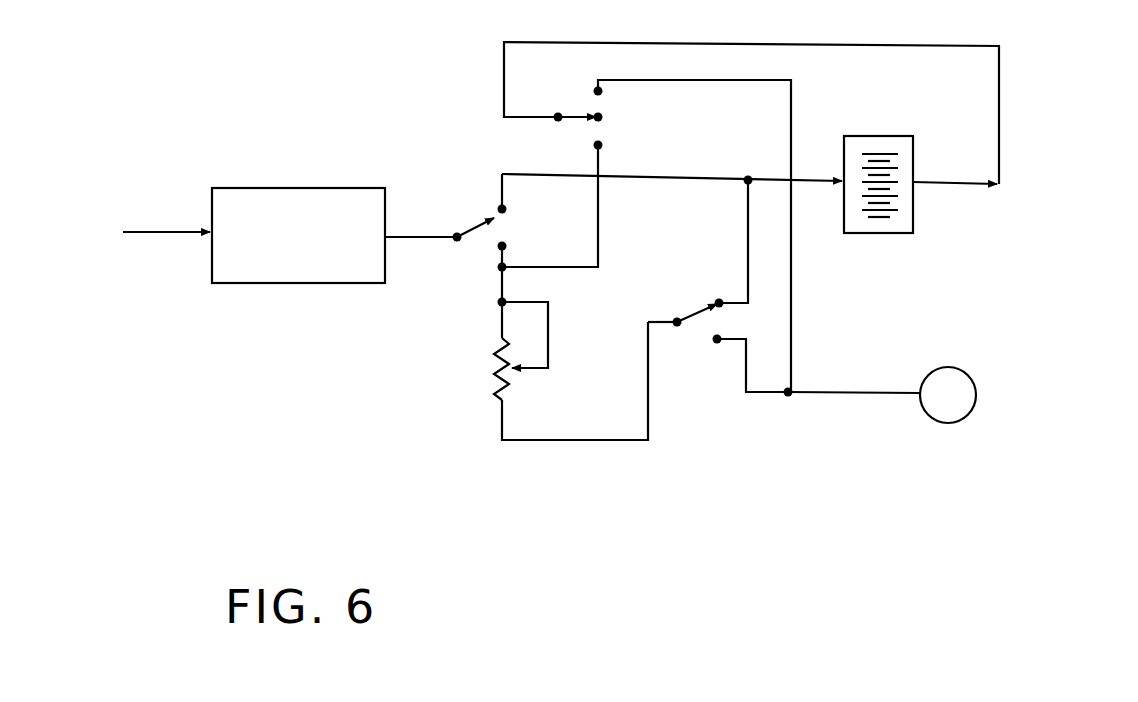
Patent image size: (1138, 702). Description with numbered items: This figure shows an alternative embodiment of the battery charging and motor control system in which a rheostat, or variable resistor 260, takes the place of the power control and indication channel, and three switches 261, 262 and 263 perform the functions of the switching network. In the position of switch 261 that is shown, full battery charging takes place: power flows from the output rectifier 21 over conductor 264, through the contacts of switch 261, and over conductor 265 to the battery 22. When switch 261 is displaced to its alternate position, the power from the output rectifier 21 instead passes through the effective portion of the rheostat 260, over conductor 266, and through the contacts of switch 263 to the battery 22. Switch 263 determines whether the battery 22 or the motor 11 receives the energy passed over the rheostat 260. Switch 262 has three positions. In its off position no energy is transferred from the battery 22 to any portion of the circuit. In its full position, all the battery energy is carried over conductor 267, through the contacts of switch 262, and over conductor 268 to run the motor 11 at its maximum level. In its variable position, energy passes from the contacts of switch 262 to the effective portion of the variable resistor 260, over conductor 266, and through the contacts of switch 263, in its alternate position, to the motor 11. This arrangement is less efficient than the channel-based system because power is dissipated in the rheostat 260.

The motor 11 is at (880, 405).
The output rectifier 21 is at (298, 247).
The battery 22 is at (962, 182).
The rheostat 260 is at (499, 351).
The switch 261 is at (502, 229).
The switch 262 is at (594, 119).
The switch 263 is at (712, 286).
The conductor 264 is at (421, 230).
The conductor 265 is at (672, 191).
The conductor 266 is at (575, 393).
The conductor 267 is at (751, 104).
The conductor 268 is at (715, 236).